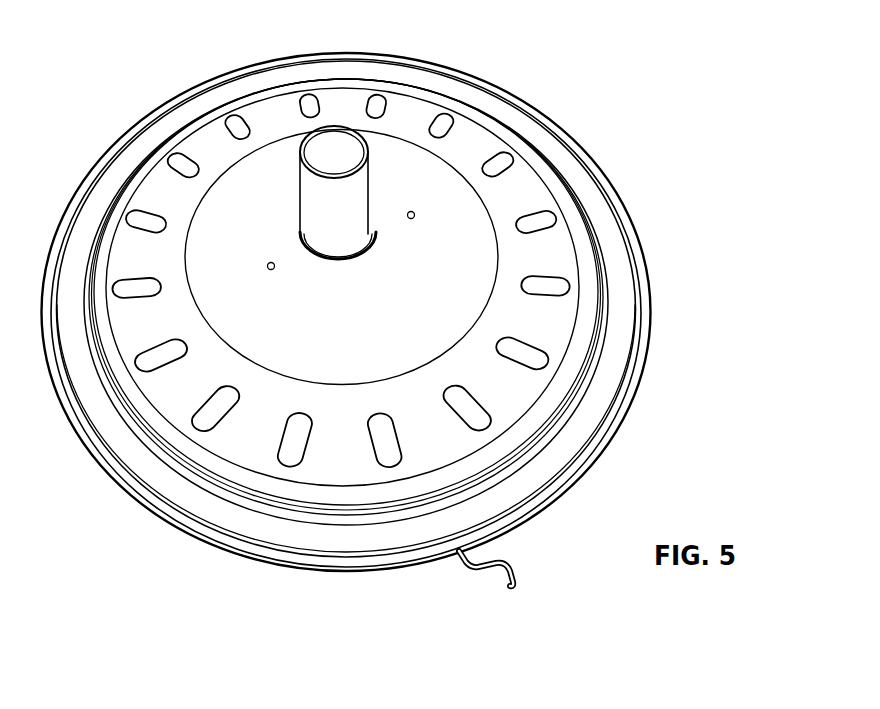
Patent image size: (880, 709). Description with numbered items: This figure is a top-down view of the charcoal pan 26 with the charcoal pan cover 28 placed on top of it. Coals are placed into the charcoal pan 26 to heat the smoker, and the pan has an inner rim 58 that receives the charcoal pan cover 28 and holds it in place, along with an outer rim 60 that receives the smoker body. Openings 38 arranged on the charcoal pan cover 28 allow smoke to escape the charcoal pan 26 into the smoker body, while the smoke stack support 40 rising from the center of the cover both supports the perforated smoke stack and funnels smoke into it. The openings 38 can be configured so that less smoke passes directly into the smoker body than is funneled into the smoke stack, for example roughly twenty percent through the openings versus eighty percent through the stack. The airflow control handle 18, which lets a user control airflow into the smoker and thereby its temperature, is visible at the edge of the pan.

The airflow control handle 18 is at (523, 573).
The charcoal pan 26 is at (256, 558).
The charcoal pan cover 28 is at (278, 182).
The openings 38 is at (298, 426).
The smoke stack support 40 is at (338, 200).
The inner rim 58 is at (318, 520).
The outer rim 60 is at (157, 475).